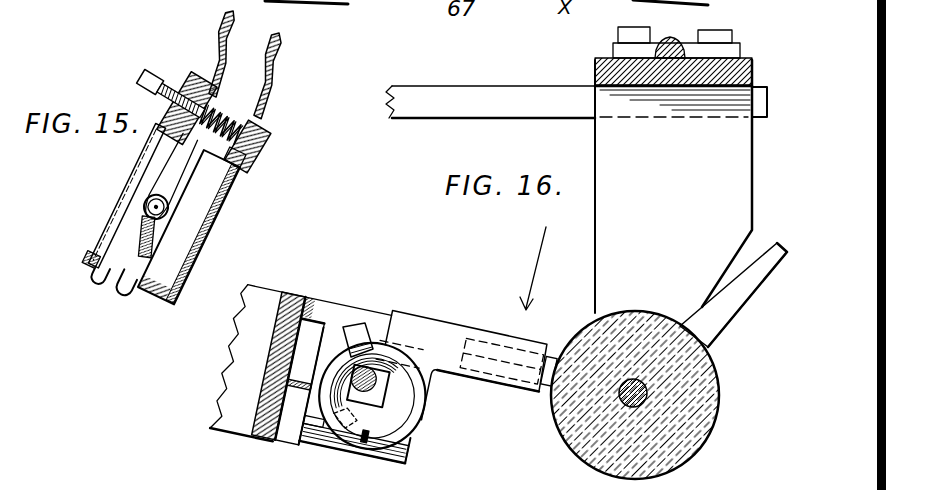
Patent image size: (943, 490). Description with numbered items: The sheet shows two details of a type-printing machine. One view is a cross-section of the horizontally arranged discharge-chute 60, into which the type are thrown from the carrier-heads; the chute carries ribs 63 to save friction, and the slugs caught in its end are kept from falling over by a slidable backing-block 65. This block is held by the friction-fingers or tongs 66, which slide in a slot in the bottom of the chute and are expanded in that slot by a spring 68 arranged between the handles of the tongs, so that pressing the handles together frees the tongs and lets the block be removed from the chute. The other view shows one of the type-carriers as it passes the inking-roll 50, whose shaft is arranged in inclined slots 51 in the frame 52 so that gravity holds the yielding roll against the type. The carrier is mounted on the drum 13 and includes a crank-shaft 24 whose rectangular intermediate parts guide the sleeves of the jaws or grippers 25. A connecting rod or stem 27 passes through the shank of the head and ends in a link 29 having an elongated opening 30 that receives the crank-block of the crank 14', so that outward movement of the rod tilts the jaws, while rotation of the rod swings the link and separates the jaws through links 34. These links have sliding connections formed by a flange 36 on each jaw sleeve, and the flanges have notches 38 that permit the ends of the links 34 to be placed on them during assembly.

In FIG. 16, the drum 13 is at (243, 428).
In FIG. 16, the crank 14' is at (385, 392).
In FIG. 16, the crank-shaft 24 is at (372, 405).
In FIG. 16, the jaws or grippers 25 is at (492, 374).
In FIG. 16, the connecting rod or stem 27 is at (297, 386).
In FIG. 16, the link 29 is at (404, 456).
In FIG. 16, the elongated opening 30 is at (328, 452).
In FIG. 16, the links 34 is at (353, 326).
In FIG. 16, the flange 36 is at (422, 417).
In FIG. 16, the notches 38 is at (367, 440).
In FIG. 16, the inking-roll 50 is at (718, 394).
In FIG. 16, the inclined slots 51 is at (733, 295).
In FIG. 16, the frame 52 is at (745, 182).
In FIG. 15, the discharge-chute 60 is at (203, 245).
In FIG. 15, the ribs 63 is at (233, 191).
In FIG. 15, the slidable backing-block 65 is at (193, 208).
In FIG. 15, the friction-fingers or tongs 66 is at (130, 243).
In FIG. 15, the spring 68 is at (208, 103).